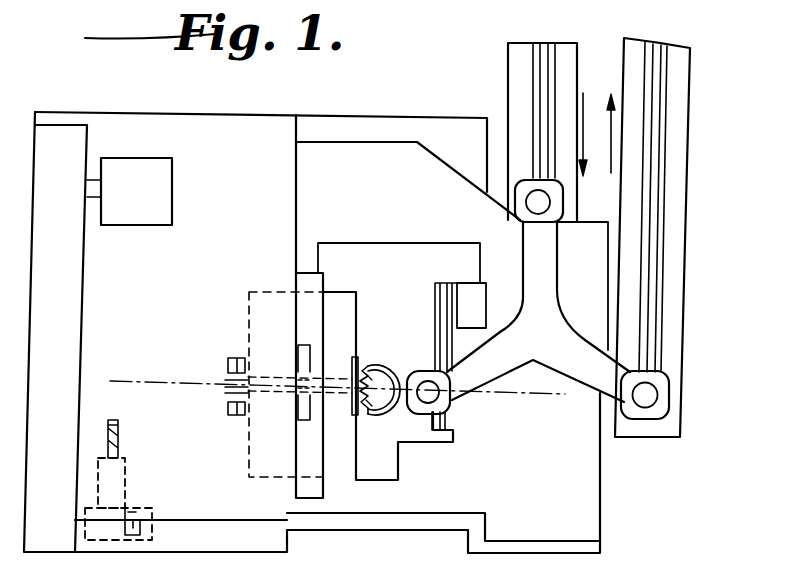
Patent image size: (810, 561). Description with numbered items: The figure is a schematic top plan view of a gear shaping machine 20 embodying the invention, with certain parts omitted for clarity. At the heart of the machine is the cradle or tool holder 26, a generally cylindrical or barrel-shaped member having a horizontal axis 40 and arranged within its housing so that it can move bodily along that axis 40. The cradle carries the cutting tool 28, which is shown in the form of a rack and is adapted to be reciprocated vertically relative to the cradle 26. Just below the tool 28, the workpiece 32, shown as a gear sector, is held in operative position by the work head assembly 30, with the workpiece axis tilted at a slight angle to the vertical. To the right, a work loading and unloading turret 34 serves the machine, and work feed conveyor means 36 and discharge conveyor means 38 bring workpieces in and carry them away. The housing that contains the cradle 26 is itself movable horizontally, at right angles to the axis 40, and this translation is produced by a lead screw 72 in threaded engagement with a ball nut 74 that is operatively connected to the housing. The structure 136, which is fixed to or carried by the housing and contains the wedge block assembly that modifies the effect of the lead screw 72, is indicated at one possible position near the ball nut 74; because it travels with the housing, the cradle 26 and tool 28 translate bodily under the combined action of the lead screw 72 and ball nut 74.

The gear shaping machine 20 is at (647, 535).
The cradle or tool holder 26 is at (268, 288).
The cutting tool 28 is at (363, 367).
The work head assembly 30 is at (460, 442).
The workpiece 32 is at (373, 382).
The work loading and unloading turret 34 is at (565, 294).
The work feed conveyor means 36 is at (500, 78).
The discharge conveyor means 38 is at (698, 187).
The horizontal axis 40 is at (172, 360).
The lead screw 72 is at (120, 430).
The ball nut 74 is at (127, 470).
The structure 136 is at (135, 498).